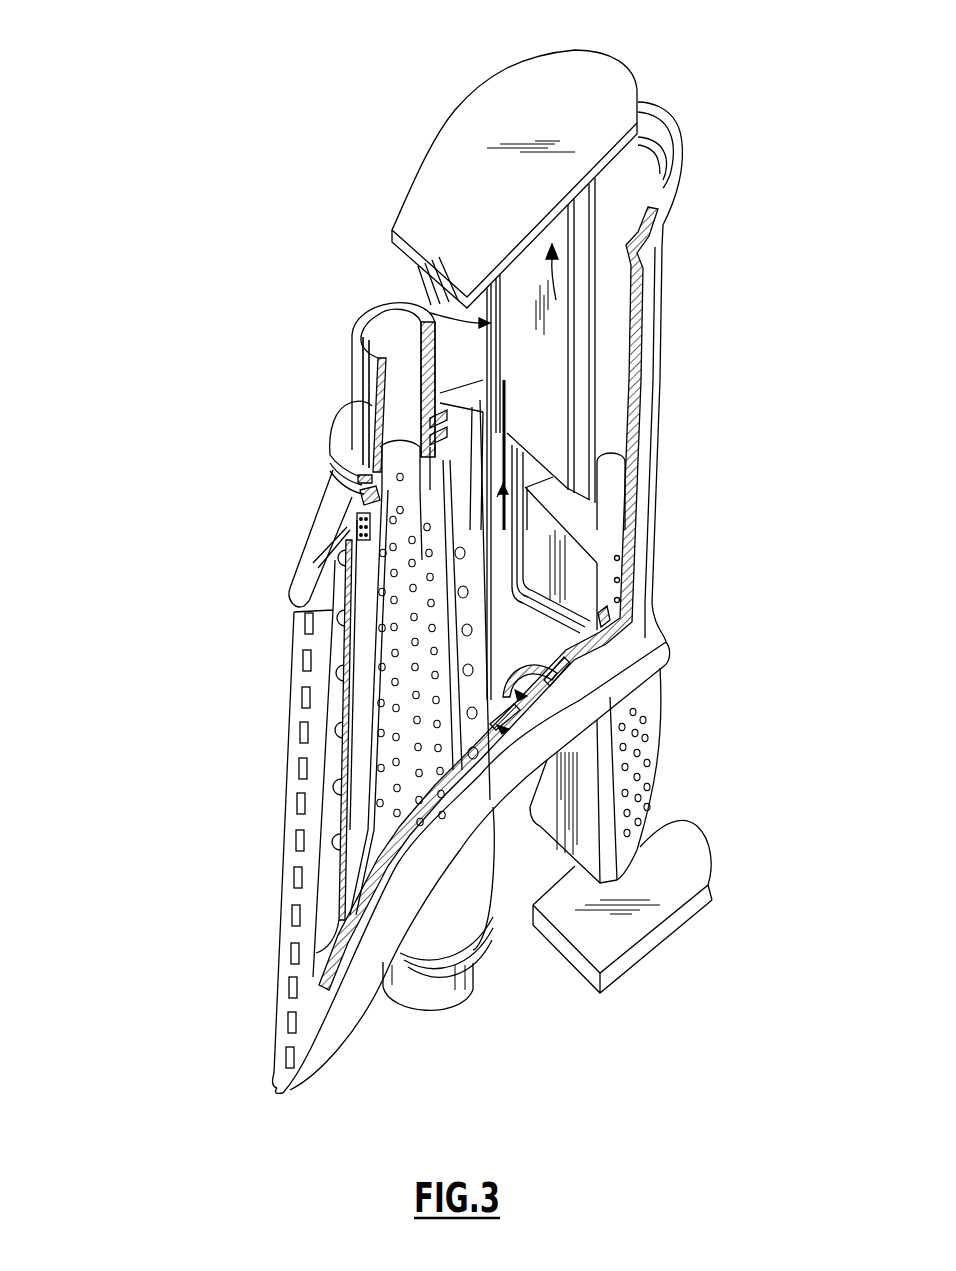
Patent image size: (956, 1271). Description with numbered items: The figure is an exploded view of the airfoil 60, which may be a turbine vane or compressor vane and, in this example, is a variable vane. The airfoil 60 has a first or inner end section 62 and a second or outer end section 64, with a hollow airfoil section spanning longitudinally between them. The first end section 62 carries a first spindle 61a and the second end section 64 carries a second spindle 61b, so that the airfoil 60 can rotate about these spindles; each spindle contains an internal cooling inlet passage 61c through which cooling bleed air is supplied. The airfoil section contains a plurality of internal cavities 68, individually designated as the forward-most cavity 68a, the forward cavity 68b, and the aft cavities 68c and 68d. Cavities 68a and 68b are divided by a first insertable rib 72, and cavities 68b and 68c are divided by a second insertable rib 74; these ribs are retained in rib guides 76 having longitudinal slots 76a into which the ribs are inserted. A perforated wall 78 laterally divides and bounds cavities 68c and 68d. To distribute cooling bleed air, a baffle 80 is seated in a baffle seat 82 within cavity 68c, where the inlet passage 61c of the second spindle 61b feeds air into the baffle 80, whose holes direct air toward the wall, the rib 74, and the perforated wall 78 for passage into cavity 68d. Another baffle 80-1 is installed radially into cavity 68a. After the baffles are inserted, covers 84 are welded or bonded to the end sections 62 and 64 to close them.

The airfoil 60 is at (174, 1051).
The first spindle 61a is at (457, 990).
The second spindle 61b is at (362, 383).
The internal cooling inlet passage 61c is at (378, 330).
The first end section 62 is at (650, 670).
The second end section 64 is at (665, 185).
The internal cavities 68 is at (618, 358).
The forward-most internal cavity 68a is at (618, 306).
The forward internal cavity 68b is at (500, 650).
The aft internal cavity 68c is at (360, 612).
The aft-most internal cavity 68d is at (328, 932).
The first insertable rib 72 is at (560, 287).
The second insertable rib 74 is at (513, 647).
The rib guides 76 is at (428, 293).
The longitudinal slots 76a is at (500, 495).
The perforated wall 78 is at (342, 703).
The baffle 80 is at (388, 763).
The baffle 80-1 is at (710, 882).
The baffle seat 82 is at (515, 728).
The covers 84 is at (565, 60).